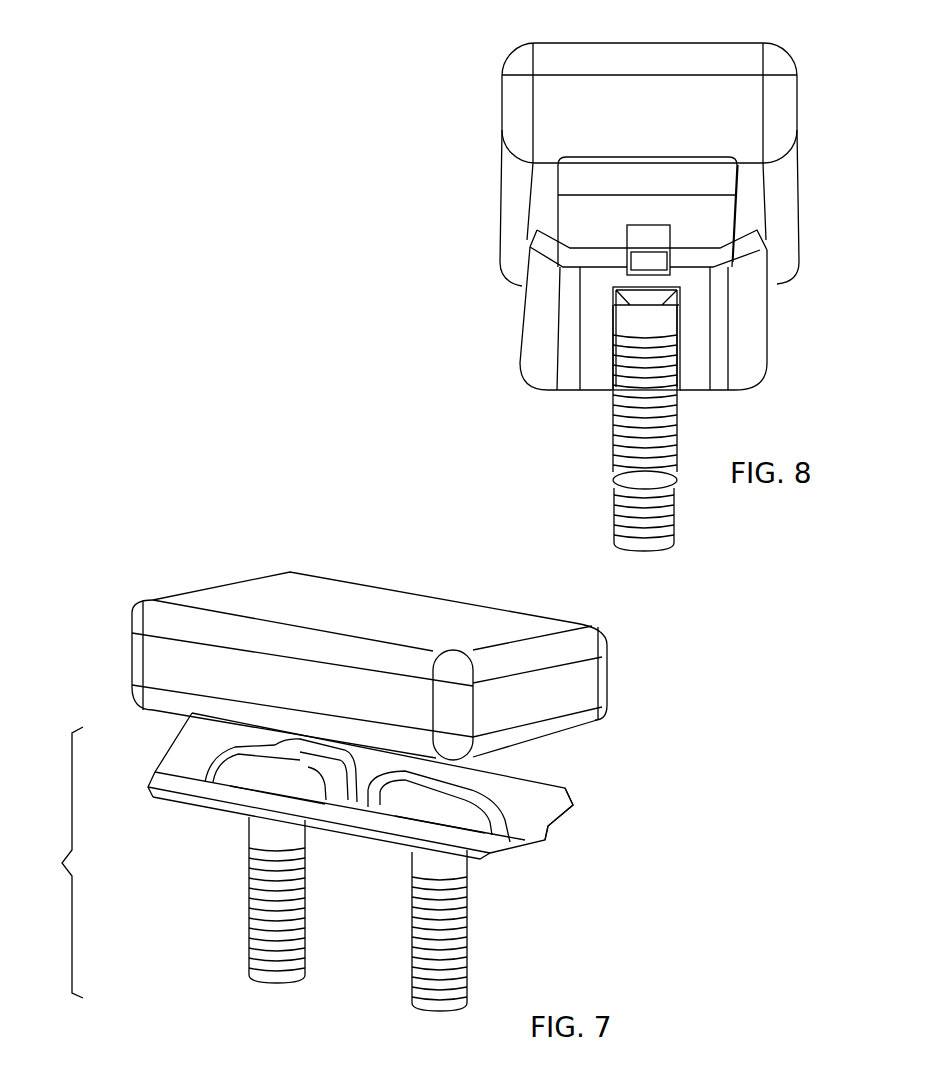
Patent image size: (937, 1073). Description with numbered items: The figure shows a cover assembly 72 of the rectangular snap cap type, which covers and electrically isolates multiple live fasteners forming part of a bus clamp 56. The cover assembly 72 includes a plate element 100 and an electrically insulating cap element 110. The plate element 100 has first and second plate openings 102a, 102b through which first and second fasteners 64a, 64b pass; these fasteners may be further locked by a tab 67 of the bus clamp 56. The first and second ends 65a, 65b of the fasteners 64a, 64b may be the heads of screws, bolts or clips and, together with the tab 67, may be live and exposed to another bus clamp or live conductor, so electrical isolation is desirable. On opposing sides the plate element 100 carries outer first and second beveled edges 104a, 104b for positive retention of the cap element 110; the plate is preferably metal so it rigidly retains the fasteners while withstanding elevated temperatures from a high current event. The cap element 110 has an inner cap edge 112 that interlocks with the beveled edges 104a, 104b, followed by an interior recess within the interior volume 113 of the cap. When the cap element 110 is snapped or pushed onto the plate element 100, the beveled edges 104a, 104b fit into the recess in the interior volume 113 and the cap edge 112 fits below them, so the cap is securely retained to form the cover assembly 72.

In FIG. 7, the bus clamp 56 is at (55, 862).
In FIG. 8, the first fastener 64a is at (630, 510).
In FIG. 7, the first fastener 64a is at (250, 938).
In FIG. 8, the second fastener 64b is at (620, 430).
In FIG. 7, the second fastener 64b is at (412, 948).
In FIG. 7, the first end 65a is at (240, 760).
In FIG. 7, the second end 65b is at (463, 812).
In FIG. 8, the tab 67 is at (645, 237).
In FIG. 7, the tab 67 is at (227, 753).
In FIG. 8, the cover assembly 72 is at (495, 36).
In FIG. 7, the cover assembly 72 is at (267, 545).
In FIG. 8, the plate element 100 is at (592, 357).
In FIG. 7, the plate element 100 is at (540, 833).
In FIG. 7, the first plate opening 102a is at (234, 829).
In FIG. 7, the second plate opening 102b is at (397, 856).
In FIG. 8, the first beveled edge 104a is at (537, 297).
In FIG. 7, the first beveled edge 104a is at (150, 787).
In FIG. 8, the second beveled edge 104b is at (747, 288).
In FIG. 7, the second beveled edge 104b is at (552, 802).
In FIG. 7, the cap element 110 is at (573, 682).
In FIG. 8, the inner cap edge 112 is at (545, 190).
In FIG. 7, the inner cap edge 112 is at (587, 720).
In FIG. 8, the interior volume 113 is at (678, 173).